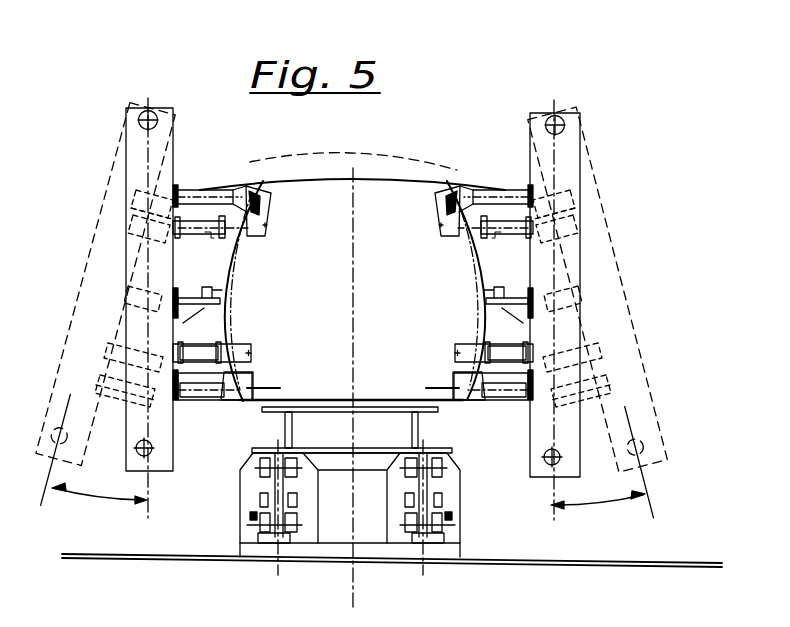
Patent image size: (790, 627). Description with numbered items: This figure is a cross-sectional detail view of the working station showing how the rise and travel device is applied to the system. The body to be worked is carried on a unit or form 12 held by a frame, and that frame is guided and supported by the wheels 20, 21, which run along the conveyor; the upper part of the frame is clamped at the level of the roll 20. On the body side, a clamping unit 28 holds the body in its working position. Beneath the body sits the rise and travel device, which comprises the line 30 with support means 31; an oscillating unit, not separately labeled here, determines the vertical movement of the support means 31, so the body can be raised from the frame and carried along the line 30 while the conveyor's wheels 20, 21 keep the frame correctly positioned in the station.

The unit 12 is at (357, 297).
The wheel 20 is at (557, 114).
The wheel 21 is at (543, 460).
The clamping unit of the body side 28 is at (488, 202).
The line 30 is at (476, 526).
The support means 31 is at (423, 430).